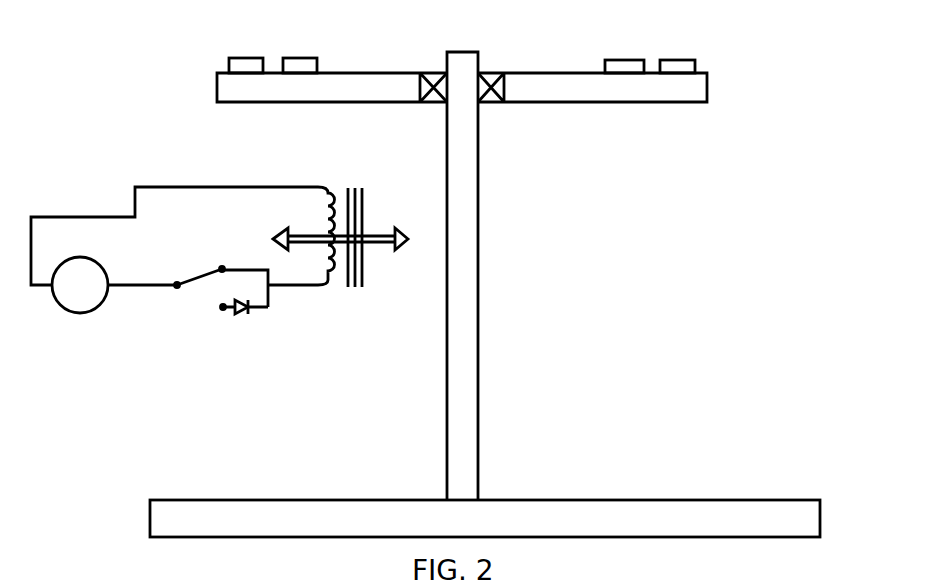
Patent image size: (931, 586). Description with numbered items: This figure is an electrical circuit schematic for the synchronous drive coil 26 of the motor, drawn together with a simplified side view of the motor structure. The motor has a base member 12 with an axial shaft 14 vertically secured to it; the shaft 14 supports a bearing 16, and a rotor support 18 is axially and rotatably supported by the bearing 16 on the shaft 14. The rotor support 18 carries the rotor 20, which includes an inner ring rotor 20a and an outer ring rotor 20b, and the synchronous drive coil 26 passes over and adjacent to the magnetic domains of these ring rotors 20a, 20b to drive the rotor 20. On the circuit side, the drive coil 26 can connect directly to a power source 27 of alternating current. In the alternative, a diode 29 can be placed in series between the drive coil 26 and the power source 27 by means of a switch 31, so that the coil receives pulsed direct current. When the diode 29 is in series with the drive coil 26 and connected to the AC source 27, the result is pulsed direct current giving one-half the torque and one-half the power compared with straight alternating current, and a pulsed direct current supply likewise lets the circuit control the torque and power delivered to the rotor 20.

The base member 12 is at (821, 515).
The axial shaft 14 is at (480, 333).
The bearing 16 is at (488, 80).
The rotor support 18 is at (708, 88).
The rotor 20 is at (693, 47).
The inner ring rotor 20a is at (608, 60).
The outer ring rotor 20b is at (680, 58).
The synchronous drive coil 26 is at (285, 187).
The power source 27 is at (87, 257).
The diode 29 is at (250, 312).
The switch 31 is at (153, 283).